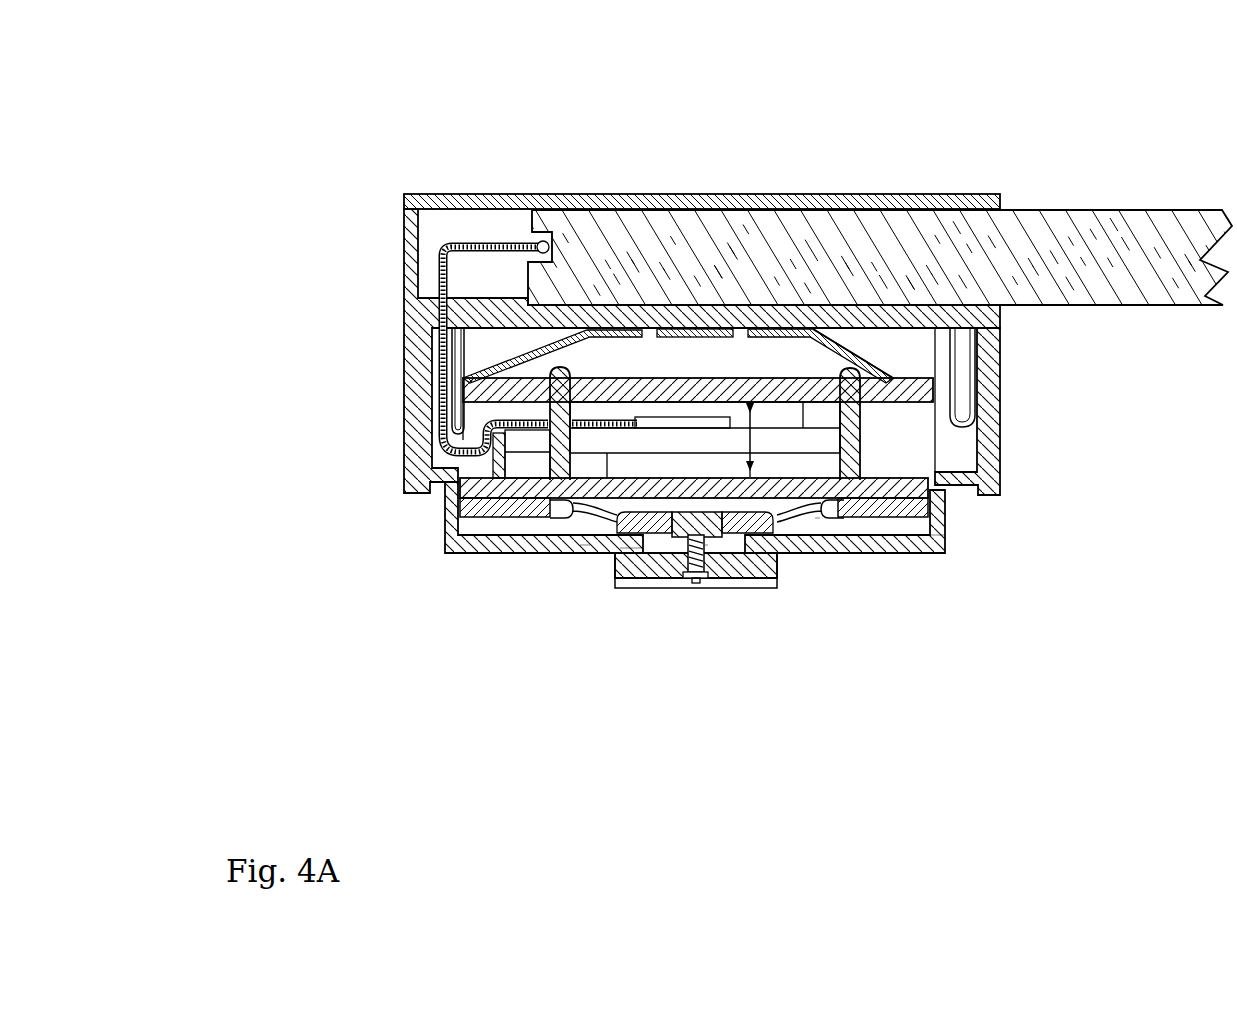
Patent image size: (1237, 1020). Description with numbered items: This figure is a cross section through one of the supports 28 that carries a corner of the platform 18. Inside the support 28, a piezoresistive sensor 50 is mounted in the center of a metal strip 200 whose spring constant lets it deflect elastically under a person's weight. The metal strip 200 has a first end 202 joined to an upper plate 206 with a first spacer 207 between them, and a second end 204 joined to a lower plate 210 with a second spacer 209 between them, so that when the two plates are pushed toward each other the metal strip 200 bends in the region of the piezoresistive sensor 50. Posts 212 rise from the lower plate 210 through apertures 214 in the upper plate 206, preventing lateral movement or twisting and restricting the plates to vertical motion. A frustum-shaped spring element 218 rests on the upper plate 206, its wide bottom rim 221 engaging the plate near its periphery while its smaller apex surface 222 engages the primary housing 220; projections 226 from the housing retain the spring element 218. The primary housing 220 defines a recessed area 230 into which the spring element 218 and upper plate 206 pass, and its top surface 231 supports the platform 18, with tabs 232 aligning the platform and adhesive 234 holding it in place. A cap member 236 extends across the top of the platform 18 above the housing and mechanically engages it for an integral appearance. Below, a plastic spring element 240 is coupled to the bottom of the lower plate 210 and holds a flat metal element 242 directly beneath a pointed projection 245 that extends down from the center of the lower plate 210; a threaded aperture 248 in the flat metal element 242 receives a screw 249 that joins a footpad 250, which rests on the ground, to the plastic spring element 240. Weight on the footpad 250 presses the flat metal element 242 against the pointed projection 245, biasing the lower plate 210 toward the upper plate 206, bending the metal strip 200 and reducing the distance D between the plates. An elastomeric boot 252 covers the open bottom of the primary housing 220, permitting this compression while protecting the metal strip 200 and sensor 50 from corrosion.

The platform 18 is at (1090, 212).
The support 28 is at (340, 353).
The piezoresistive sensor 50 is at (583, 545).
The metal strip 200 is at (860, 500).
The first end 202 is at (933, 472).
The second end 204 is at (505, 447).
The upper plate 206 is at (933, 390).
The first spacer 207 is at (903, 443).
The second spacer 209 is at (490, 510).
The lower plate 210 is at (965, 540).
The post 212 is at (528, 515).
The aperture 214 is at (903, 378).
The spring element 218 is at (490, 340).
The primary housing 220 is at (405, 348).
The bottom rim 221 is at (450, 478).
The apex surface 222 is at (760, 337).
The projection 226 is at (733, 338).
The recessed area 230 is at (440, 332).
The top surface 231 is at (437, 318).
The tab 232 is at (420, 240).
The adhesive 234 is at (762, 305).
The cap member 236 is at (463, 194).
The plastic spring element 240 is at (955, 548).
The flat metal element 242 is at (772, 588).
The pointed projection 245 is at (630, 548).
The threaded aperture 248 is at (692, 585).
The screw 249 is at (706, 585).
The footpad 250 is at (818, 520).
The elastomeric boot 252 is at (553, 520).
The distance D is at (760, 450).